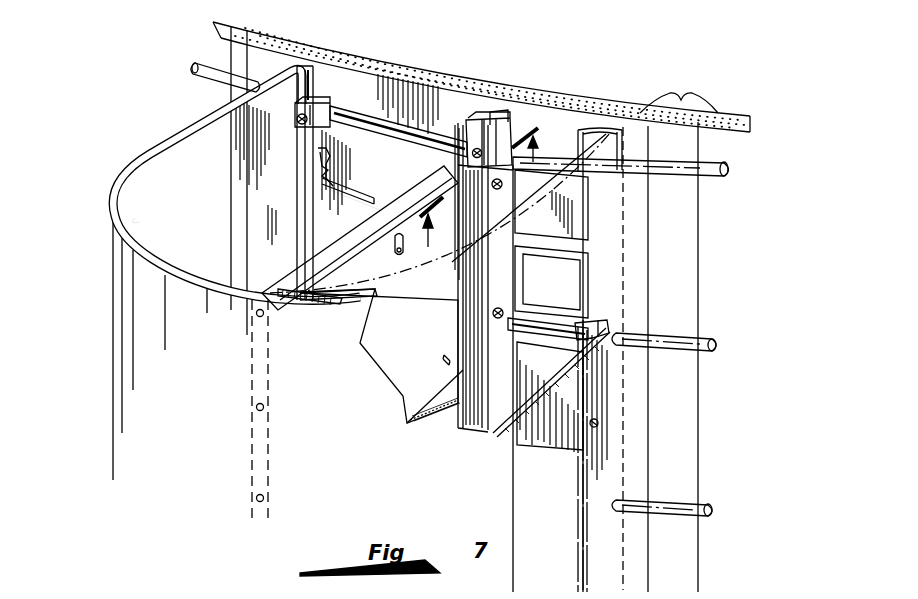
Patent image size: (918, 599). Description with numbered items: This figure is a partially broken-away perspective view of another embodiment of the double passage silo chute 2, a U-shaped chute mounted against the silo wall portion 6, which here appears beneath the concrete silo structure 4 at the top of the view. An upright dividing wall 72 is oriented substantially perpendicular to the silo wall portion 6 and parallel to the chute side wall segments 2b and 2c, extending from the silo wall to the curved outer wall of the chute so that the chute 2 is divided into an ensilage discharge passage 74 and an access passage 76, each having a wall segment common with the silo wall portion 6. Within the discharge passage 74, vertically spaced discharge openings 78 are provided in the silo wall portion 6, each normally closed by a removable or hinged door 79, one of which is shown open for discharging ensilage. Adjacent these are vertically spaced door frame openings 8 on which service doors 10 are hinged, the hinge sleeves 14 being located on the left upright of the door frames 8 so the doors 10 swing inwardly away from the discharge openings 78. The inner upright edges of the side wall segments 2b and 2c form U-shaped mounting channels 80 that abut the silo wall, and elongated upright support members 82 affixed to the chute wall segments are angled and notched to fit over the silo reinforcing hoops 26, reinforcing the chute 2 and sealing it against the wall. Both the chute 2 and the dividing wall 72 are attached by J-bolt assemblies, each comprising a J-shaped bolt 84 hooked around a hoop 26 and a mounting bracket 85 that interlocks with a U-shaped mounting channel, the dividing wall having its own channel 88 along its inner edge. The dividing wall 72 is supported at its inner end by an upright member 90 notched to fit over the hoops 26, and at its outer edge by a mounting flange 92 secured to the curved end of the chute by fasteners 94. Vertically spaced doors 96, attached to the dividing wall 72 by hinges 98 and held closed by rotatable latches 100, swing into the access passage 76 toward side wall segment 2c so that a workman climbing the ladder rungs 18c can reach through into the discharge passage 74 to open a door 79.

The silo chute 2 is at (200, 184).
The side wall segment 2b is at (538, 451).
The side wall segment 2c is at (186, 124).
The concrete slab 4 is at (679, 89).
The silo wall portion 6 is at (439, 58).
The door frame opening 8 is at (311, 153).
The door 10 is at (365, 219).
The hinge sleeve 14 is at (323, 170).
The ladder rung 18c is at (355, 195).
The silo reinforcing hoop 26 is at (712, 166).
The dividing wall 72 is at (292, 271).
The ensilage discharge passage 74 is at (345, 292).
The access passage 76 is at (140, 220).
The discharge opening 78 is at (555, 259).
The door 79 is at (576, 204).
The mounting channel 80 is at (313, 70).
The support member 82 is at (293, 62).
The J-shaped bolt 84 is at (331, 103).
The mounting bracket 85 is at (295, 112).
The mounting channel 88 is at (500, 118).
The upright member 90 is at (492, 424).
The mounting flange 92 is at (268, 292).
The fastener 94 is at (264, 314).
The door 96 is at (432, 314).
The hinge 98 is at (445, 357).
The rotatable latch 100 is at (418, 256).